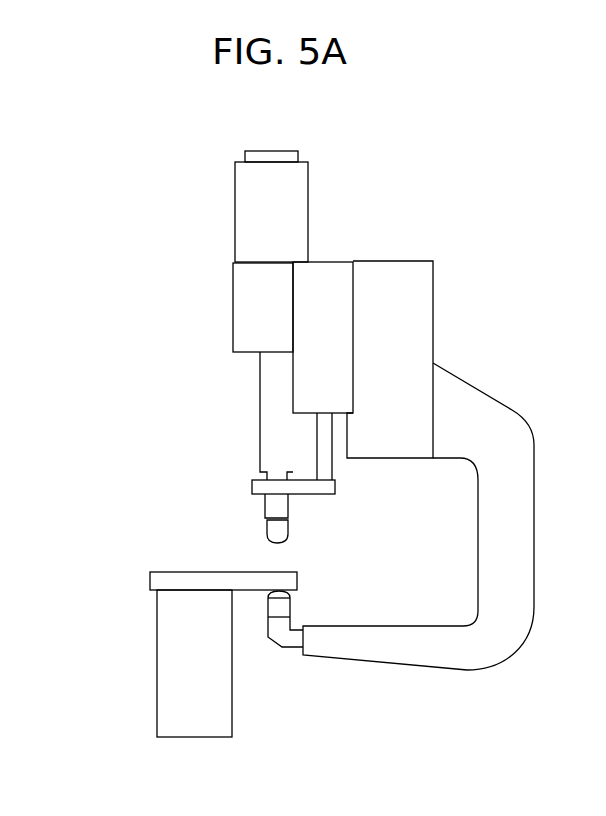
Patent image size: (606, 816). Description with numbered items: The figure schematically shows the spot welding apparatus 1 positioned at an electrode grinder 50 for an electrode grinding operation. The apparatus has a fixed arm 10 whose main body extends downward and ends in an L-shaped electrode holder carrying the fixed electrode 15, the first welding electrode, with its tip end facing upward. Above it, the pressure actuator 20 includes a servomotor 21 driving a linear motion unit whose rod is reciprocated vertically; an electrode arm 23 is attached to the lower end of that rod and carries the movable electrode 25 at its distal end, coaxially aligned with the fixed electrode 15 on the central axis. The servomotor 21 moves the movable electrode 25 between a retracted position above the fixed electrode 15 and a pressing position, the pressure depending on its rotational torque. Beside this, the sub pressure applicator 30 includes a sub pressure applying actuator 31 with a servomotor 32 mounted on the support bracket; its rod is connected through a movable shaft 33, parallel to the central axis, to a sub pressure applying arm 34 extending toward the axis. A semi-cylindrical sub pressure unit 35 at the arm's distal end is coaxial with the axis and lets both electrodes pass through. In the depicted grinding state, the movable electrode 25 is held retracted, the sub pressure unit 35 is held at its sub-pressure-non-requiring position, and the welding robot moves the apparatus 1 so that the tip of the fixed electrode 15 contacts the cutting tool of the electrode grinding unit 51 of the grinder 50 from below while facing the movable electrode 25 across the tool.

The spot welding apparatus 1 is at (515, 182).
The fixed arm 10 is at (522, 497).
The fixed electrode 15 is at (282, 605).
The pressure actuator 20 is at (222, 213).
The servomotor 21 is at (253, 180).
The electrode arm 23 is at (270, 372).
The movable electrode 25 is at (275, 532).
The sub pressure applicator 30 is at (351, 504).
The sub pressure applying actuator 31 is at (345, 261).
The servomotor 32 is at (322, 270).
The movable shaft 33 is at (327, 462).
The sub pressure applying arm 34 is at (262, 487).
The sub pressure unit 35 is at (275, 485).
The electrode grinder 50 is at (128, 627).
The electrode grinding unit 51 is at (267, 577).